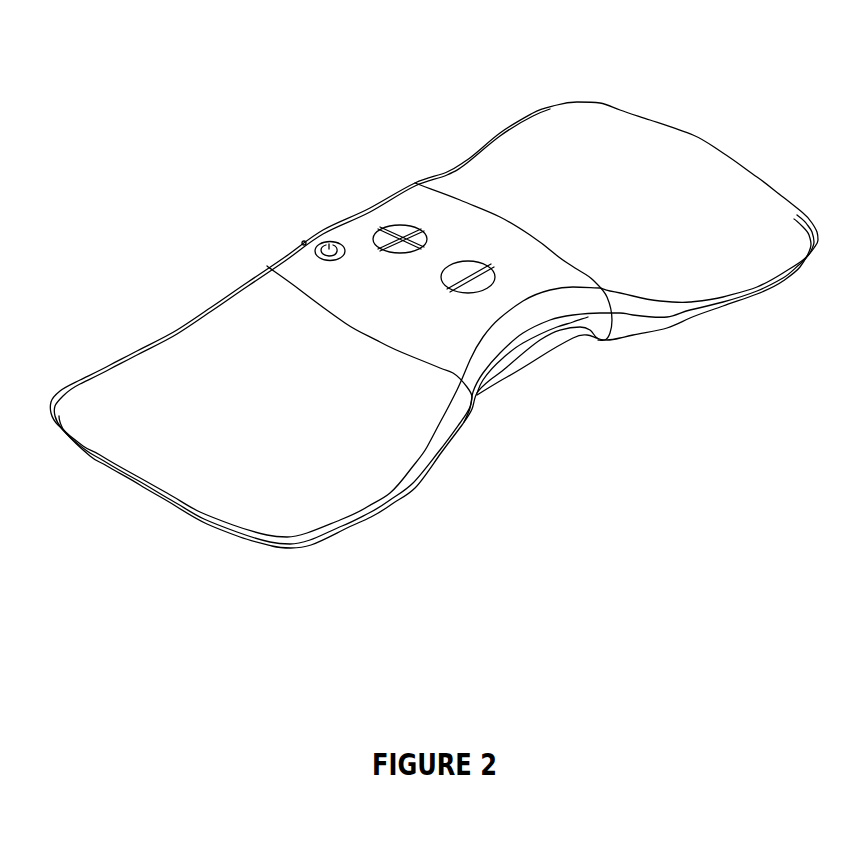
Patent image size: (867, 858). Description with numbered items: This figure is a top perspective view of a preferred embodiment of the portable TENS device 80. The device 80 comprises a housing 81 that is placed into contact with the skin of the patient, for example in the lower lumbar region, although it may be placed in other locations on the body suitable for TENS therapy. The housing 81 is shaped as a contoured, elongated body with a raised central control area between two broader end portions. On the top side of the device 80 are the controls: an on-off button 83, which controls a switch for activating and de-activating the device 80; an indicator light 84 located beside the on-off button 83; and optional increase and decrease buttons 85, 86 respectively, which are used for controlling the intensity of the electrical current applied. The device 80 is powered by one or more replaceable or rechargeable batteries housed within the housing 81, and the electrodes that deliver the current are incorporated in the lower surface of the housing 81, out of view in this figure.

The portable TENS device 80 is at (573, 78).
The housing 81 is at (675, 160).
The on-off button 83 is at (330, 242).
The indicator light 84 is at (302, 239).
The increase button 85 is at (402, 220).
The decrease button 86 is at (470, 257).